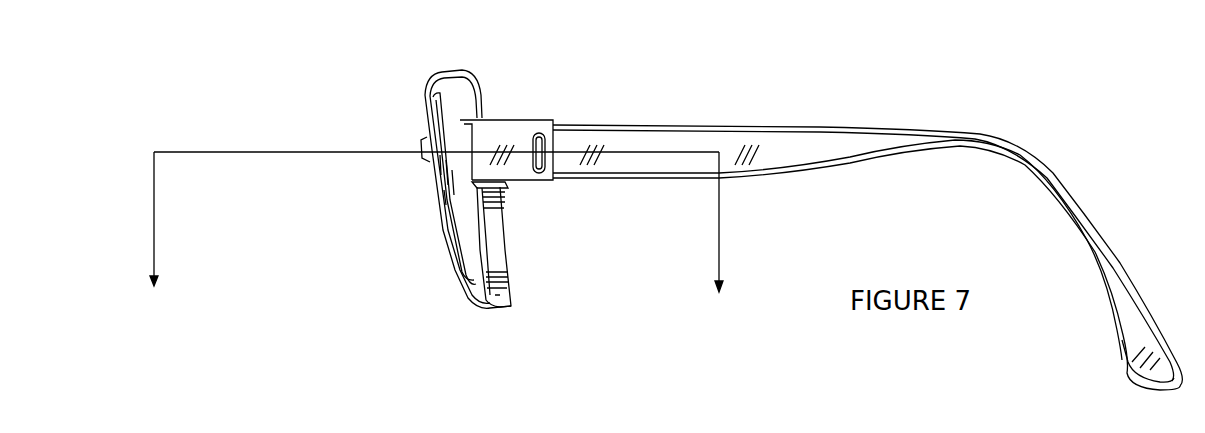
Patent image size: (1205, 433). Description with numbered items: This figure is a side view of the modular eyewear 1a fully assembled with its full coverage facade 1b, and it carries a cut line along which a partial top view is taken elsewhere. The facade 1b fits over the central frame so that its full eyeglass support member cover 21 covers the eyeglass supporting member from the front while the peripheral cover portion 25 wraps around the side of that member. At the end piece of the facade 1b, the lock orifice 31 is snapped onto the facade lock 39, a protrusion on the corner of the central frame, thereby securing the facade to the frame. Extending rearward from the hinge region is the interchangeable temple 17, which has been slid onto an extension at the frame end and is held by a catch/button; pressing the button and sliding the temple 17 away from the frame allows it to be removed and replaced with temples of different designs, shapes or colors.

The eyewear 1a is at (867, 220).
The full coverage facade 1b is at (443, 301).
The temple 17 is at (803, 150).
The full eyeglass support member cover 21 is at (444, 233).
The peripheral cover portion 25 is at (510, 257).
The lock orifice 31 is at (537, 134).
The facade lock 39 is at (542, 137).